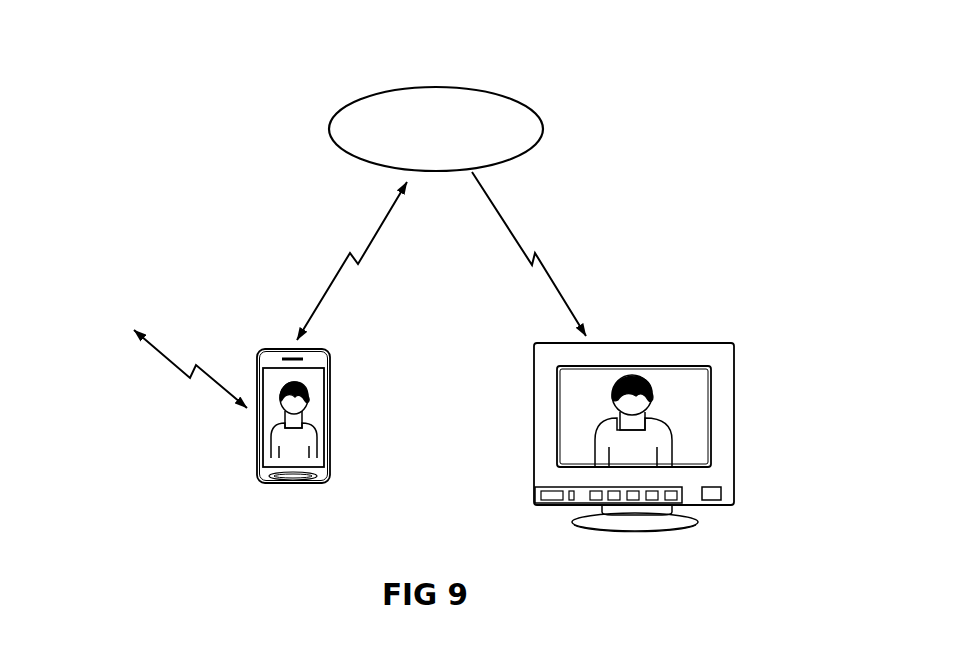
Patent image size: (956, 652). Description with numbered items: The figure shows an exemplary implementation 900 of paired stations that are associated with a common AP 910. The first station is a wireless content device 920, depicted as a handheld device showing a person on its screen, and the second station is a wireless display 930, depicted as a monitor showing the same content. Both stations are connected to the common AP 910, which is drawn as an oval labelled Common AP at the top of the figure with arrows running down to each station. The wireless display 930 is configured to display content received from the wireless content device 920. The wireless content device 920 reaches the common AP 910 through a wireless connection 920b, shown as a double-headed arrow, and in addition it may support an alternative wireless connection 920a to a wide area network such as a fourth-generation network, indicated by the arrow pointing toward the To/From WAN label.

The exemplary implementation 900 is at (785, 63).
The common AP 910 is at (453, 87).
The wireless content device 920 is at (310, 349).
The alternative wireless connection 920a is at (160, 353).
The wireless connection 920b is at (383, 223).
The wireless display 930 is at (692, 343).